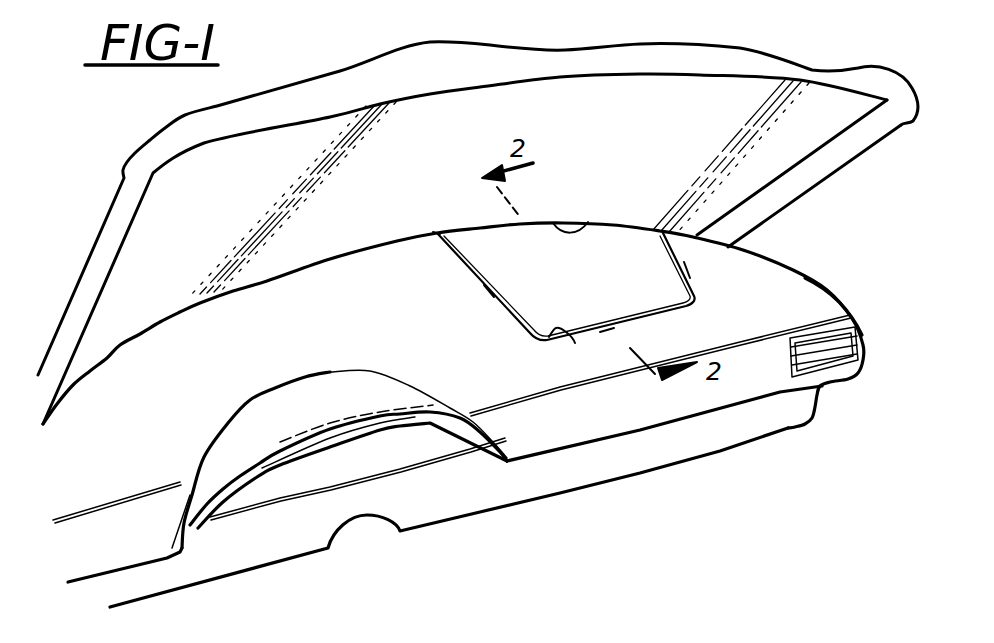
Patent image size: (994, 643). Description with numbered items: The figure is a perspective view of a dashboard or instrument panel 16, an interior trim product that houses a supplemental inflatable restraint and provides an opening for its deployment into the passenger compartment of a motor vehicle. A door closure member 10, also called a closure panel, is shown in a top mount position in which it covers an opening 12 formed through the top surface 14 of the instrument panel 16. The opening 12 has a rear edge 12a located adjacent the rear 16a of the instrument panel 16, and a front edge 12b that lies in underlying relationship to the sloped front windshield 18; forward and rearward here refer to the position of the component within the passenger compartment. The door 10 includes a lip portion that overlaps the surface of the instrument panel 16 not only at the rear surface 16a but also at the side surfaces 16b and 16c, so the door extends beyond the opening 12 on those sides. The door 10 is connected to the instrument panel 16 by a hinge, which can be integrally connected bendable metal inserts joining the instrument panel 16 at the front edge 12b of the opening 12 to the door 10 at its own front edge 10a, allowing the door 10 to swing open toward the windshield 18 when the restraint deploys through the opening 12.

The door closure member 10 is at (597, 327).
The front edge of door 10a is at (467, 233).
The opening 12 is at (680, 289).
The rear edge of opening 12a is at (575, 343).
The front edge of opening 12b is at (587, 224).
The top surface 14 is at (397, 263).
The instrument panel 16 is at (845, 281).
The rear surface of instrument panel 16a is at (607, 330).
The side surface of instrument panel 16b is at (490, 292).
The side surface of instrument panel 16c is at (690, 272).
The front windshield 18 is at (720, 97).